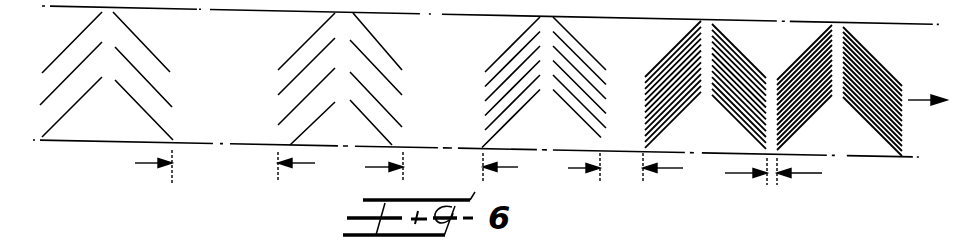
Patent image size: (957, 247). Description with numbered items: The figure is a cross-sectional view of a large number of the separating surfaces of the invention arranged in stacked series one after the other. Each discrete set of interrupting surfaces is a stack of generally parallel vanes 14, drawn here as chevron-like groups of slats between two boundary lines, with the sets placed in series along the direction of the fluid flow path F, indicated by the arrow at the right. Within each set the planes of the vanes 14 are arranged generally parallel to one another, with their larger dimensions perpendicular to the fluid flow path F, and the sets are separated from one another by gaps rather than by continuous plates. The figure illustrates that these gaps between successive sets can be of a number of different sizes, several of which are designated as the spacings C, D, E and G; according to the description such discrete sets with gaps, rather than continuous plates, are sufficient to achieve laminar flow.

The vanes 14 is at (137, 33).
The spacing C is at (225, 166).
The spacing D is at (441, 167).
The spacing E is at (625, 168).
The fluid flow path F is at (916, 99).
The spacing G is at (768, 185).